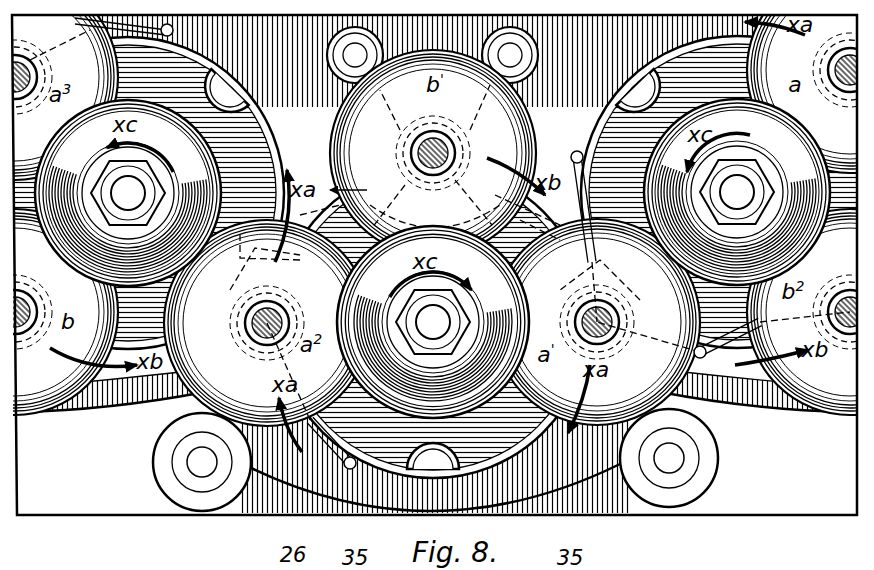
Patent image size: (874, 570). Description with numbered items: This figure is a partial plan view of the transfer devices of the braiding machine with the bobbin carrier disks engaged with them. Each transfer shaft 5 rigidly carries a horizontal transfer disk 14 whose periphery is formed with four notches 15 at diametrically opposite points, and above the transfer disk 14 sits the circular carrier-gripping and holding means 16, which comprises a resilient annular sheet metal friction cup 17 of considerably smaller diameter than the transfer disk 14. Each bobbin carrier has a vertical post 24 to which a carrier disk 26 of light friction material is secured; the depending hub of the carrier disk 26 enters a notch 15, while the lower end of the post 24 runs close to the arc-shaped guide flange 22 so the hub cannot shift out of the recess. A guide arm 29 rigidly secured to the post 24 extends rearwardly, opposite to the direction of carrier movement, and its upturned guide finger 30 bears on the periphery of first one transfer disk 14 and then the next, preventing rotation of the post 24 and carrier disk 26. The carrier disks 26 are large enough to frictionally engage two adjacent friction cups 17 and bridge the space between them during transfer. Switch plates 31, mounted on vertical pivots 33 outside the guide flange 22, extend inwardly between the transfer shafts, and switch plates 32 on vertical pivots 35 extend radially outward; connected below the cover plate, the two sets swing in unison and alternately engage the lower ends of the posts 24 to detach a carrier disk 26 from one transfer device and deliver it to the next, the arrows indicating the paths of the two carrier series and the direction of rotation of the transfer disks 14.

The transfer shaft 5 is at (432, 257).
The transfer disk 14 is at (247, 157).
The notches 15 is at (232, 104).
The carrier-gripping and holding means 16 is at (432, 258).
The friction cup 17 is at (40, 222).
The guide flange 22 is at (107, 400).
The post 24 is at (18, 88).
The carrier disk 26 is at (42, 408).
The guide arm 29 is at (100, 28).
The guide finger 30 is at (174, 31).
The switch plates 31 is at (197, 413).
The switch plates 32 is at (410, 183).
The vertical pivots 33 is at (200, 462).
The vertical pivots 35 is at (432, 55).